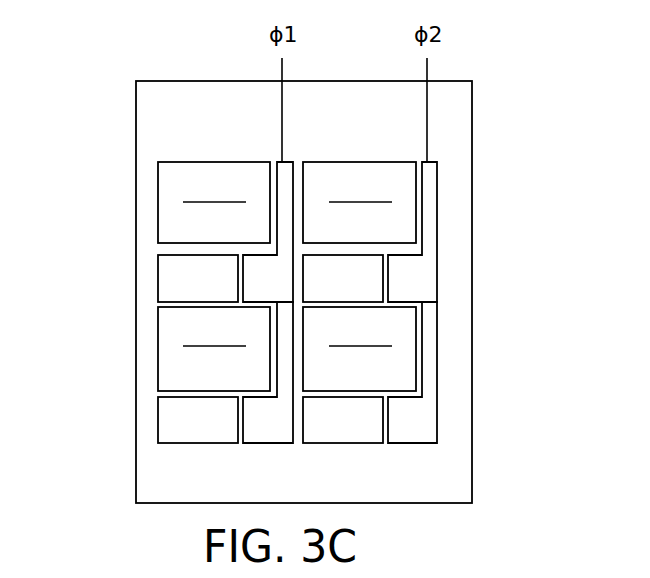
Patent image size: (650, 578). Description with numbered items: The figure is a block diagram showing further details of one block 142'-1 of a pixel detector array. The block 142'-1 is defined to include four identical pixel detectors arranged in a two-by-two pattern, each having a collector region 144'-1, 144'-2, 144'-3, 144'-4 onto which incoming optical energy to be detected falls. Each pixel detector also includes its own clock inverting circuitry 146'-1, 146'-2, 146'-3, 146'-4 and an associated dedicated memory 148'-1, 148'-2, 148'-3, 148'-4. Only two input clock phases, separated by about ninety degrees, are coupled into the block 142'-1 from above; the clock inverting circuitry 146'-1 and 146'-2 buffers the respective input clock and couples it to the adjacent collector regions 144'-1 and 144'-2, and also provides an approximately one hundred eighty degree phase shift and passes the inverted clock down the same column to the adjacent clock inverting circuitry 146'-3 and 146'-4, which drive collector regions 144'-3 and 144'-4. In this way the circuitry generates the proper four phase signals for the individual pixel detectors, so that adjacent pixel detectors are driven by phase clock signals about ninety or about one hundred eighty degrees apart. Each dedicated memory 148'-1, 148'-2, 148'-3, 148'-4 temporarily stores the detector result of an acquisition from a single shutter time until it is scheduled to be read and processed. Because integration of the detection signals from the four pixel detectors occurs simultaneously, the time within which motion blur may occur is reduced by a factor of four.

The block 142'-1 is at (258, 292).
The collector region 144'-1 is at (214, 202).
The collector region 144'-2 is at (359, 202).
The collector region 144'-3 is at (214, 349).
The collector region 144'-4 is at (359, 349).
The clock inverting circuitry 146'-1 is at (240, 208).
The clock inverting circuitry 146'-2 is at (385, 208).
The clock inverting circuitry 146'-3 is at (229, 397).
The clock inverting circuitry 146'-4 is at (485, 379).
The dedicated memory 148'-1 is at (137, 276).
The dedicated memory 148'-2 is at (437, 289).
The dedicated memory 148'-3 is at (137, 417).
The dedicated memory 148'-4 is at (370, 443).